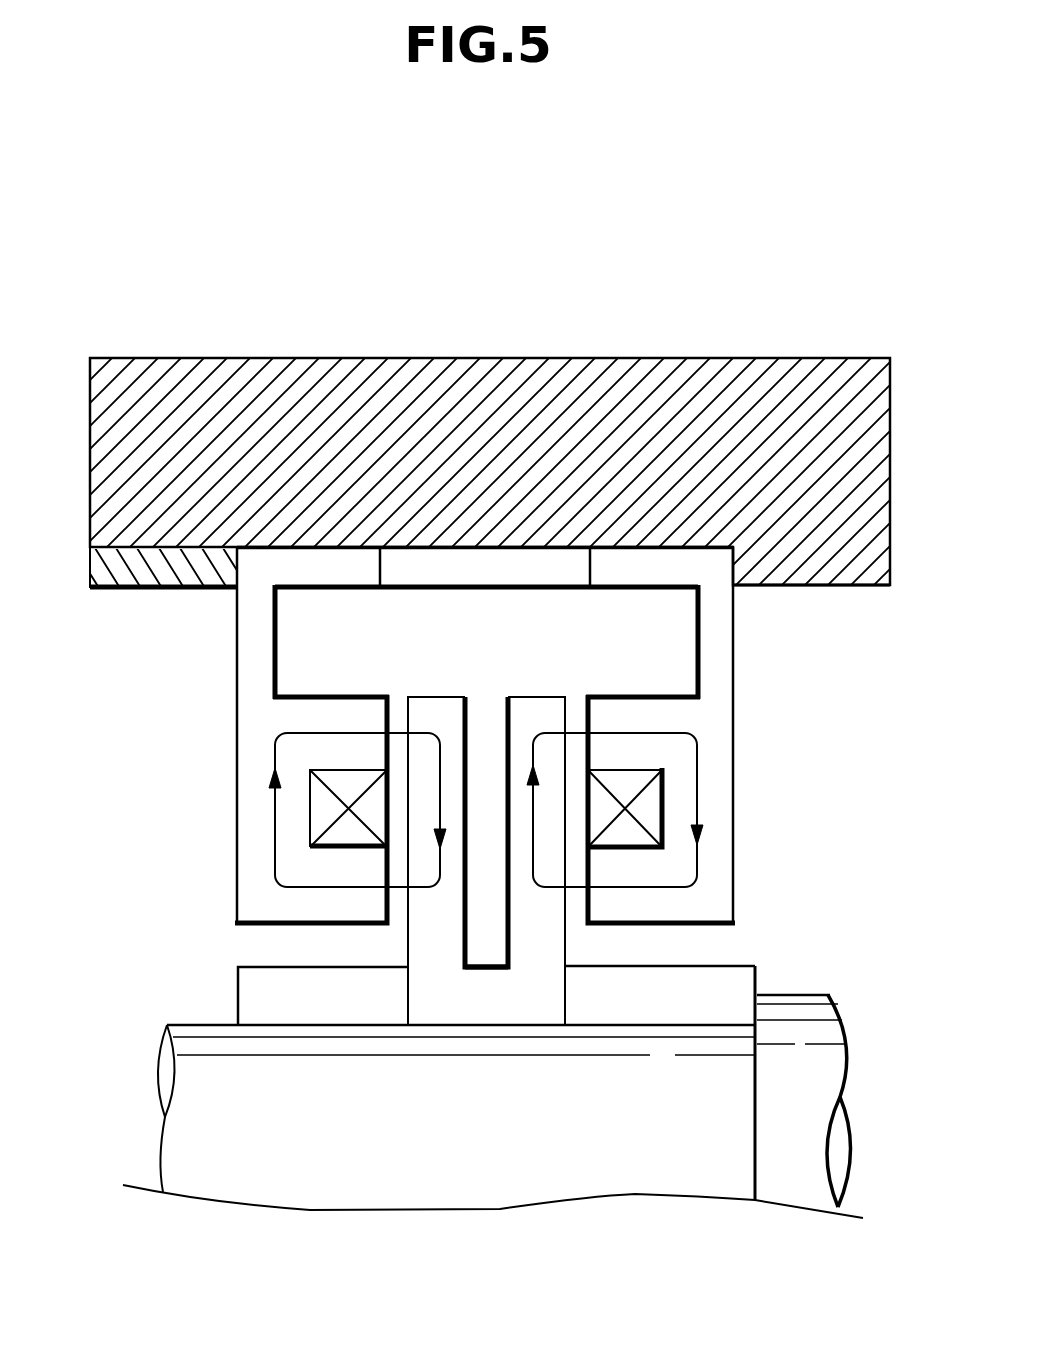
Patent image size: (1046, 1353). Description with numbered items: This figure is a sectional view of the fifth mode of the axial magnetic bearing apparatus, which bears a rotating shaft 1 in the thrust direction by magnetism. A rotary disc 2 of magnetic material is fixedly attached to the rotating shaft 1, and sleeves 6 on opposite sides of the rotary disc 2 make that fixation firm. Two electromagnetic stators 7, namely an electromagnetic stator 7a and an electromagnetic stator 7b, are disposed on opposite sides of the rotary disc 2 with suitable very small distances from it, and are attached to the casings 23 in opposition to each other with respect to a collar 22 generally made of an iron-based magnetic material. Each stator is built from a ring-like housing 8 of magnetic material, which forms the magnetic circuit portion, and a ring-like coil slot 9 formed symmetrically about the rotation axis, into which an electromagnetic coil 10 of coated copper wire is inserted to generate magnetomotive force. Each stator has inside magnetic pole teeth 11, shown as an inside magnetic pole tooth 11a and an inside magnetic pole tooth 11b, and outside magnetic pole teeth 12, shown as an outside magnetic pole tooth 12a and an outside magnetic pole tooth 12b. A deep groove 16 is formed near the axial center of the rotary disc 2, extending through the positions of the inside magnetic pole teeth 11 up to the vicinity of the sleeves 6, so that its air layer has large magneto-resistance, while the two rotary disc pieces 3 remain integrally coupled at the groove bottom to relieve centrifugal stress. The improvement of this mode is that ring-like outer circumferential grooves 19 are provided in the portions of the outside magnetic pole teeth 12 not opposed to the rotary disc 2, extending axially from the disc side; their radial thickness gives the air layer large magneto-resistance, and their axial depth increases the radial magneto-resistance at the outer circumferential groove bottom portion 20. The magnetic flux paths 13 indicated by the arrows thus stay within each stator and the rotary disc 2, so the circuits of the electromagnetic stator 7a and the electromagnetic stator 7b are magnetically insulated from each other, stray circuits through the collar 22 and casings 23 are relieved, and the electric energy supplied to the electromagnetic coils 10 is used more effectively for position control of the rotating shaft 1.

The rotating shaft 1 is at (205, 1077).
The rotary disc 2 is at (572, 695).
The rotary disc pieces 3 is at (425, 713).
The sleeves 6 is at (273, 993).
The electromagnetic stators 7 is at (405, 248).
The electromagnetic stator 7a is at (333, 572).
The electromagnetic stator 7b is at (635, 565).
The ring-like housings 8 is at (255, 749).
The coil slots 9 is at (312, 803).
The electromagnetic coils 10 is at (330, 823).
The inside magnetic pole teeth 11 is at (408, 1095).
The inside magnetic pole tooth 11a is at (390, 905).
The inside magnetic pole tooth 11b is at (583, 905).
The outside magnetic pole teeth 12 is at (870, 595).
The outside magnetic pole tooth 12a is at (387, 700).
The outside magnetic pole tooth 12b is at (577, 697).
The magnetic flux 13 is at (273, 762).
The deep groove 16 is at (484, 952).
The outer circumferential grooves 19 is at (297, 625).
The outer circumferential groove bottom portion 20 is at (276, 677).
The collar 22 is at (478, 566).
The casings 23 is at (166, 388).